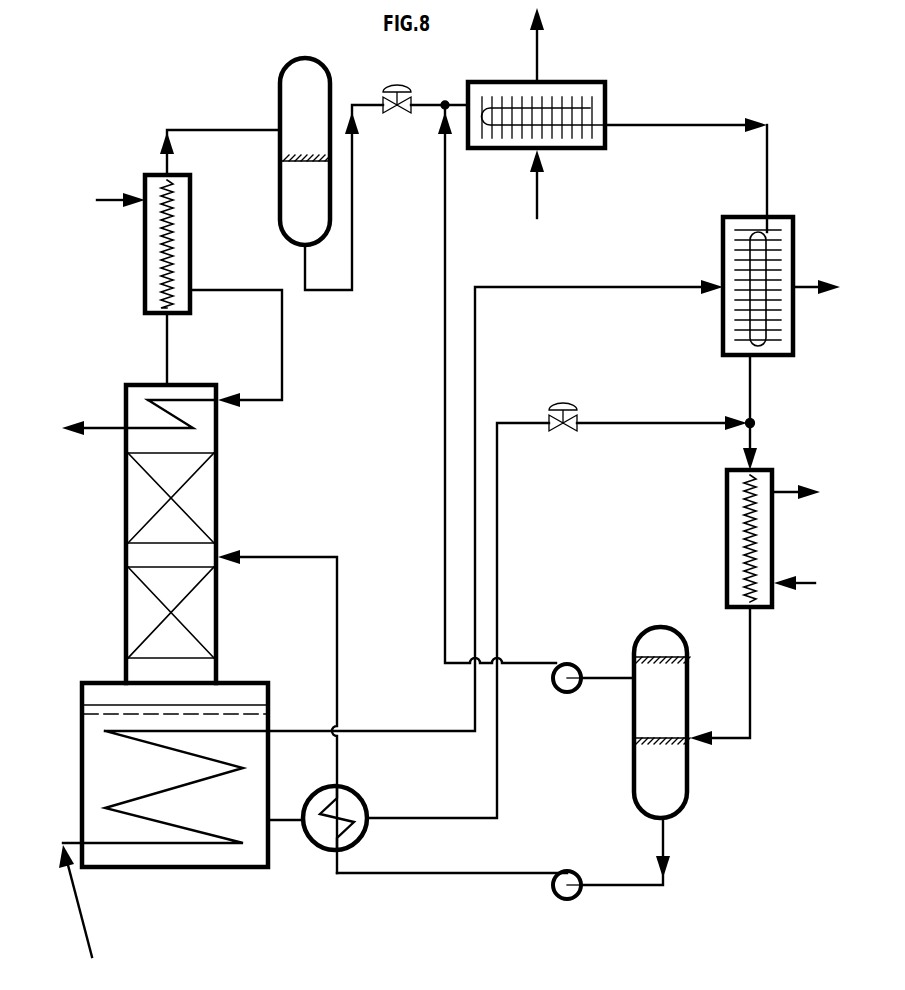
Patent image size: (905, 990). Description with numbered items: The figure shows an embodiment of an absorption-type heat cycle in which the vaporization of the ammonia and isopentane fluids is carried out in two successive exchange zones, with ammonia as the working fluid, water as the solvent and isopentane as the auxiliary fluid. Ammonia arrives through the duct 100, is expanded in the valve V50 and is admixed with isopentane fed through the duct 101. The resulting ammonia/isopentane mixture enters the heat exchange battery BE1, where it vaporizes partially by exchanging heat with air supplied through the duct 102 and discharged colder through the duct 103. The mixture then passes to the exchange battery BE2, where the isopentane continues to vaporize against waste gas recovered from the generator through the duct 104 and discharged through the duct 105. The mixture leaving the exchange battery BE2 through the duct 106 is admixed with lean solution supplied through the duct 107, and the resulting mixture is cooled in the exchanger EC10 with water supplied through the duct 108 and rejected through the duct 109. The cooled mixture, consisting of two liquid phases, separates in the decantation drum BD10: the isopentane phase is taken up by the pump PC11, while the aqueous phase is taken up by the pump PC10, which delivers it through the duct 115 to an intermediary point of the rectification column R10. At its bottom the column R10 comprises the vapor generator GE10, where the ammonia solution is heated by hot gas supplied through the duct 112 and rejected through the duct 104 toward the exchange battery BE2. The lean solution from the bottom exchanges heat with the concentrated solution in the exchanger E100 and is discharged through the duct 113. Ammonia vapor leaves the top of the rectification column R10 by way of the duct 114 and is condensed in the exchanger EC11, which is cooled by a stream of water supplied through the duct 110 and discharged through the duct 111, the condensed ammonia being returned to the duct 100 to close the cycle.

The duct 100 is at (316, 294).
The duct 101 is at (443, 258).
The duct 102 is at (540, 205).
The duct 103 is at (535, 43).
The duct 104 is at (602, 286).
The duct 105 is at (823, 284).
The duct 106 is at (753, 390).
The duct 107 is at (645, 421).
The duct 108 is at (782, 490).
The duct 109 is at (816, 586).
The duct 110 is at (116, 196).
The duct 111 is at (283, 350).
The duct 112 is at (90, 943).
The duct 113 is at (281, 823).
The duct 114 is at (166, 350).
The duct 115 is at (318, 556).
The exchanger EC11 is at (192, 212).
The exchanger EC10 is at (727, 533).
The heat exchange battery BE1 is at (565, 80).
The exchange battery BE2 is at (733, 216).
The valve V50 is at (425, 128).
The rectification column R10 is at (218, 503).
The vapor generator GE10 is at (178, 868).
The exchanger E100 is at (356, 796).
The decantation drum BD10 is at (689, 762).
The pump PC10 is at (567, 899).
The pump PC11 is at (567, 692).